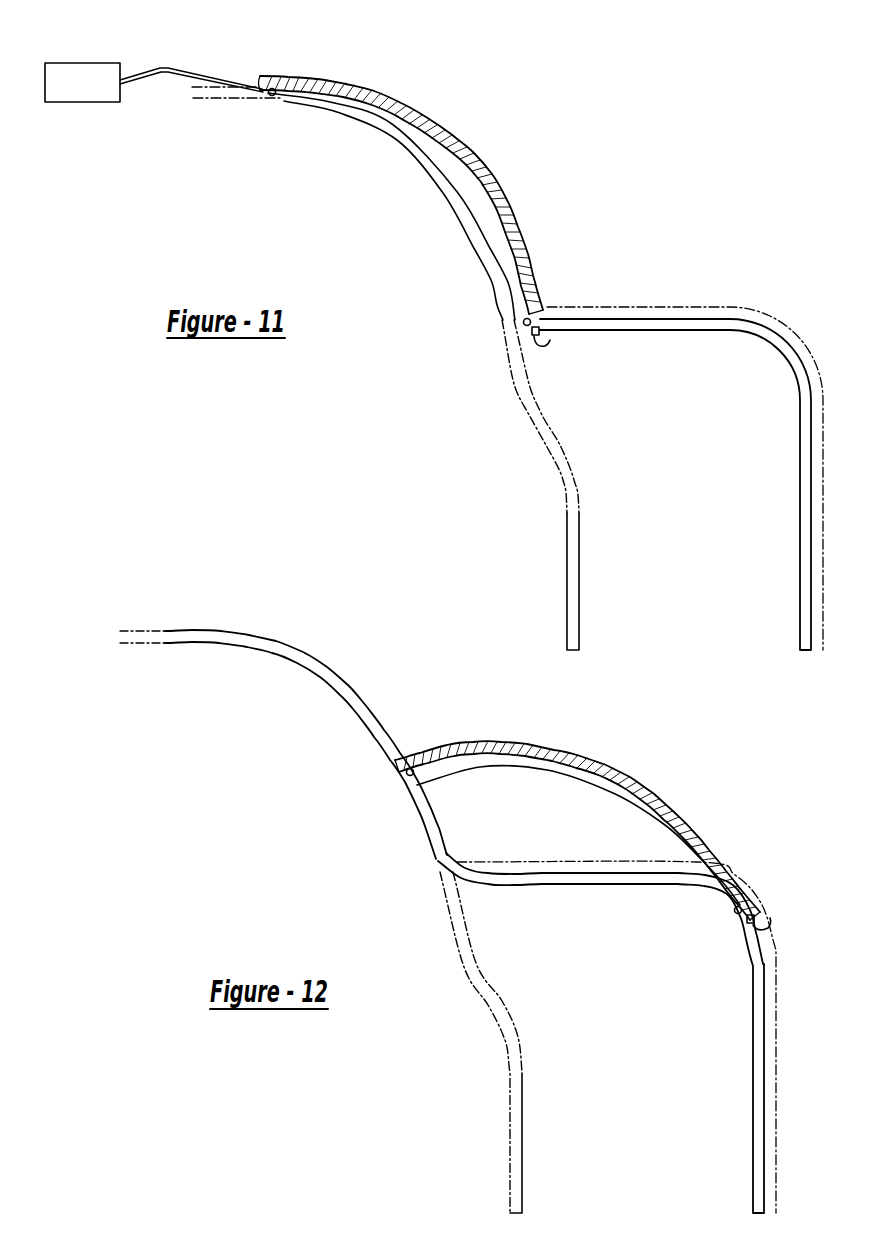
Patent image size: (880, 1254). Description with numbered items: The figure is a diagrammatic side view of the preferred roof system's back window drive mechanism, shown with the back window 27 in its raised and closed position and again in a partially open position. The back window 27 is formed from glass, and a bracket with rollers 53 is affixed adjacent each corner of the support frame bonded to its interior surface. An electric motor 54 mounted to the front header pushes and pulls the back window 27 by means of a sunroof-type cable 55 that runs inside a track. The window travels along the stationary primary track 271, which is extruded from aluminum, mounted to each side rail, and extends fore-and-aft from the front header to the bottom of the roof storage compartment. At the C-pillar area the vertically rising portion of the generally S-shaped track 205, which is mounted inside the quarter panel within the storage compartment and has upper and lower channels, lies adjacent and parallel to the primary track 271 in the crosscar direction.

In FIG. 11, the back window 27 is at (393, 103).
In FIG. 12, the back window 27 is at (627, 772).
In FIG. 11, the bracket with rollers 53 is at (277, 98).
In FIG. 11, the electric motor 54 is at (98, 103).
In FIG. 11, the sunroof-type cable 55 is at (183, 70).
In FIG. 11, the S-shaped track 205 is at (678, 323).
In FIG. 12, the S-shaped track 205 is at (312, 668).
In FIG. 11, the primary track 271 is at (200, 92).
In FIG. 12, the primary track 271 is at (165, 632).